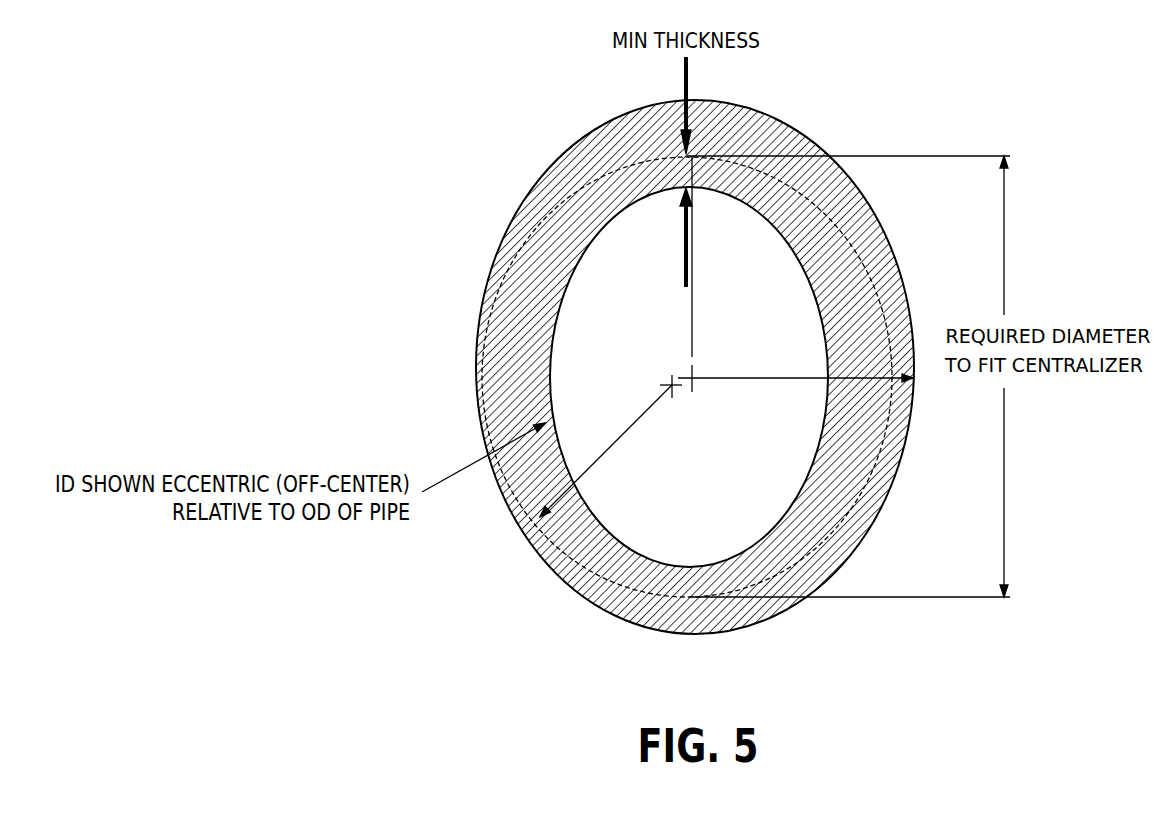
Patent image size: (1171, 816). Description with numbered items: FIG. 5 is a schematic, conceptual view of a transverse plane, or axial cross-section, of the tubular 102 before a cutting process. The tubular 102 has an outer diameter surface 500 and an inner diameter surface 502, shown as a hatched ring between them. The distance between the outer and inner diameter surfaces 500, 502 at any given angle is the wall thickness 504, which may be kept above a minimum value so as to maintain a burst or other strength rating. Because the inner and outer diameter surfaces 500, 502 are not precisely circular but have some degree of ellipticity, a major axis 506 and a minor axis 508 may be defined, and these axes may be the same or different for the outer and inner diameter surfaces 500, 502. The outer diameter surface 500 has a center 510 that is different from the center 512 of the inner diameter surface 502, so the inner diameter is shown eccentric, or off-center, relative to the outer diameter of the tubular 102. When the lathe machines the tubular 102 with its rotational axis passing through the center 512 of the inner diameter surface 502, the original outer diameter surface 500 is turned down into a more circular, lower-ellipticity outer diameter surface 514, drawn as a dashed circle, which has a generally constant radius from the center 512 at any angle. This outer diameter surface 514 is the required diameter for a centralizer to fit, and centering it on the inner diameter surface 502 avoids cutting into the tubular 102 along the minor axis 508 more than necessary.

The tubular 102 is at (503, 365).
The outer diameter surface 500 is at (793, 122).
The inner diameter surface 502 is at (683, 567).
The wall thickness 504 is at (682, 228).
The major axis 506 is at (692, 310).
The minor axis 508 is at (788, 377).
The center of the outer diameter surface 510 is at (693, 390).
The center of the inner diameter surface 512 is at (673, 393).
The outer diameter surface 514 is at (890, 273).